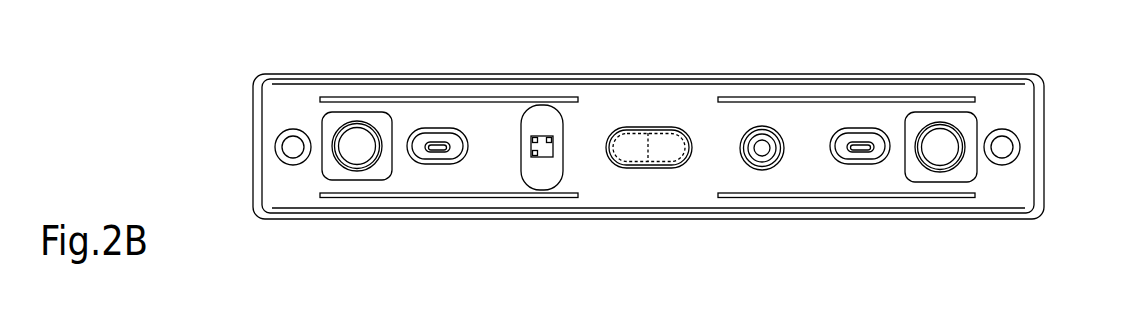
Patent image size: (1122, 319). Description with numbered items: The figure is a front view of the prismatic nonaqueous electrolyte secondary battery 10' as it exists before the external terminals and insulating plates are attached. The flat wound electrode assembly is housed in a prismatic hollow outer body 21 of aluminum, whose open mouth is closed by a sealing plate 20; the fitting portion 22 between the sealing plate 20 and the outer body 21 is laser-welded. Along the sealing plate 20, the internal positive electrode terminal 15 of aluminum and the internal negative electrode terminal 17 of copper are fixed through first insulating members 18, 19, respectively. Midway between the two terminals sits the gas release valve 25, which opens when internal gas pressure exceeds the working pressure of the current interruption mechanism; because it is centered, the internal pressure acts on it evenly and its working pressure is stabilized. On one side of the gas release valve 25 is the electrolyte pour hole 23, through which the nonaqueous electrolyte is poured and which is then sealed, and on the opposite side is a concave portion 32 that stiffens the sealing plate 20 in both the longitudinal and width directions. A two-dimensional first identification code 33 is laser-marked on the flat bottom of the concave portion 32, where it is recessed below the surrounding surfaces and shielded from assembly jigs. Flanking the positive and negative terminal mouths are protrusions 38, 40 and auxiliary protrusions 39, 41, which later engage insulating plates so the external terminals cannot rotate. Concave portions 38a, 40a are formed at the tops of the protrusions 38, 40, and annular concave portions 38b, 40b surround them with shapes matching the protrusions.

The prismatic nonaqueous electrolyte secondary battery 10' is at (633, 148).
The internal positive electrode terminal 15 is at (945, 152).
The internal negative electrode terminal 17 is at (357, 150).
The first insulating member 18 is at (962, 122).
The first insulating member 19 is at (333, 116).
The sealing plate 20 is at (682, 98).
The prismatic hollow outer body 21 is at (1033, 74).
The fitting portion 22 is at (1044, 114).
The electrolyte pour hole 23 is at (762, 150).
The gas release valve 25 is at (617, 131).
The concave portion 32 is at (545, 182).
The first identification code 33 is at (537, 137).
The protrusion 38 is at (876, 146).
The concave portion 38a is at (868, 142).
The annular concave portion 38b is at (855, 138).
The auxiliary protrusion 39 is at (1022, 157).
The protrusion 40 is at (447, 148).
The concave portion 40a is at (448, 154).
The annular concave portion 40b is at (424, 157).
The auxiliary protrusion 41 is at (278, 166).